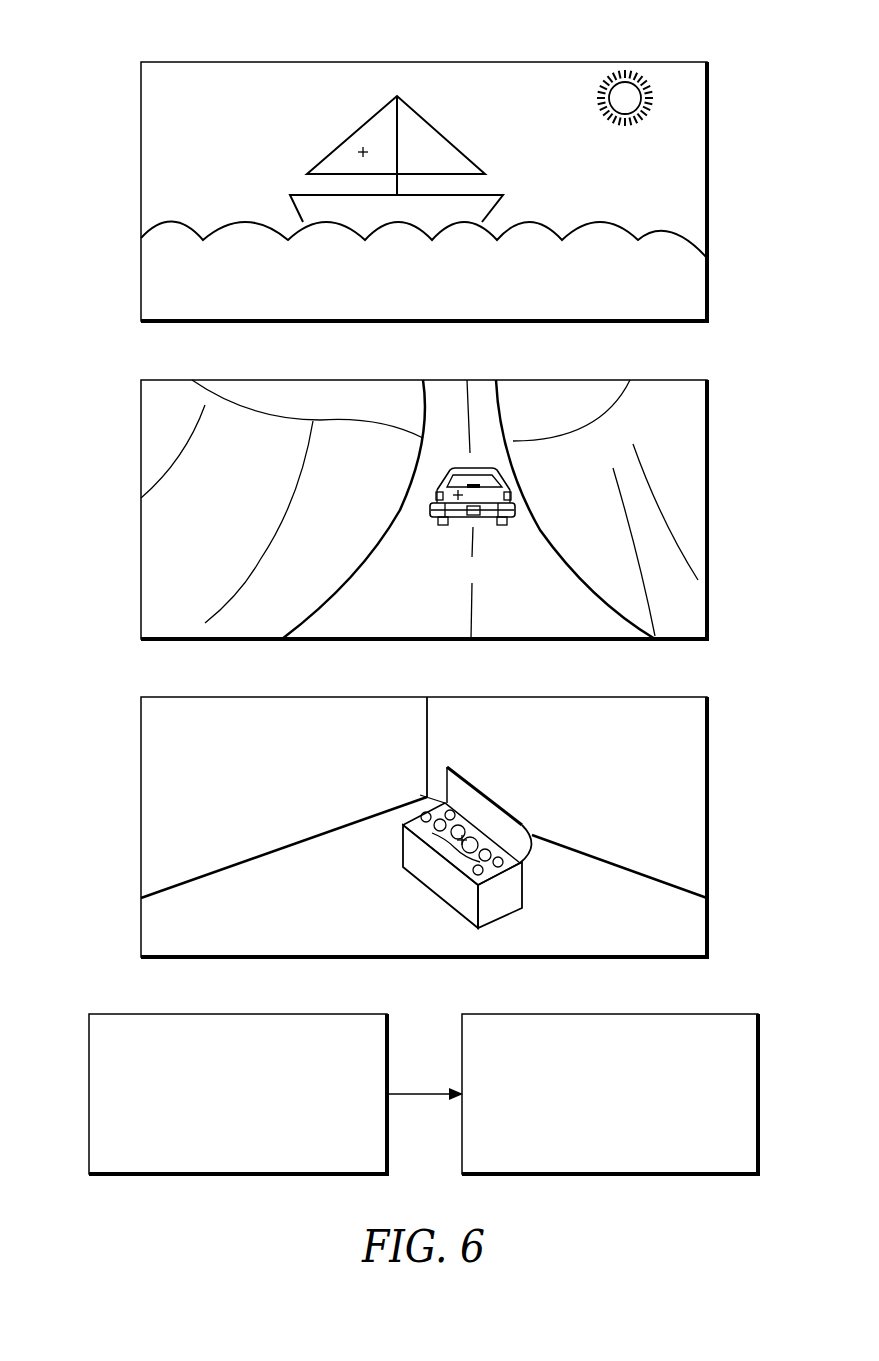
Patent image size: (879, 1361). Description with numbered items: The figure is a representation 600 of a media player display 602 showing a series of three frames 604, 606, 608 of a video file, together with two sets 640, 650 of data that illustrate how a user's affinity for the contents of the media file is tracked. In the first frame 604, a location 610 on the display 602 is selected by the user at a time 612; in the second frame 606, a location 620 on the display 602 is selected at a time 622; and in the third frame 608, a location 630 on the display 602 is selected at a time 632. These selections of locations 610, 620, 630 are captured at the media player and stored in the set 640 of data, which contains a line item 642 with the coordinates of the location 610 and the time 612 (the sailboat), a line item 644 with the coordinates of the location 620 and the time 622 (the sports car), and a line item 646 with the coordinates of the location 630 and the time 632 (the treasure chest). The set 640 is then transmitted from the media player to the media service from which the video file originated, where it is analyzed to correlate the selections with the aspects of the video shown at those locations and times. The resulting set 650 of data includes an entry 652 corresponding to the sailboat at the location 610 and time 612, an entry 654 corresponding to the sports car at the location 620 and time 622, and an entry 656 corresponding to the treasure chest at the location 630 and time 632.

The representation 600 is at (108, 42).
The media player display 602 is at (704, 62).
The frame 604 is at (667, 131).
The frame 606 is at (665, 450).
The frame 608 is at (665, 768).
The location 610 is at (356, 151).
The time 612 is at (87, 192).
The location 620 is at (455, 492).
The time 622 is at (87, 510).
The location 630 is at (458, 837).
The time 632 is at (87, 826).
The set of data 640 is at (398, 998).
The line item 642 is at (140, 1086).
The line item 644 is at (140, 1119).
The line item 646 is at (140, 1153).
The set of data 650 is at (769, 998).
The entry 652 is at (706, 1087).
The entry 654 is at (718, 1121).
The entry 656 is at (748, 1153).